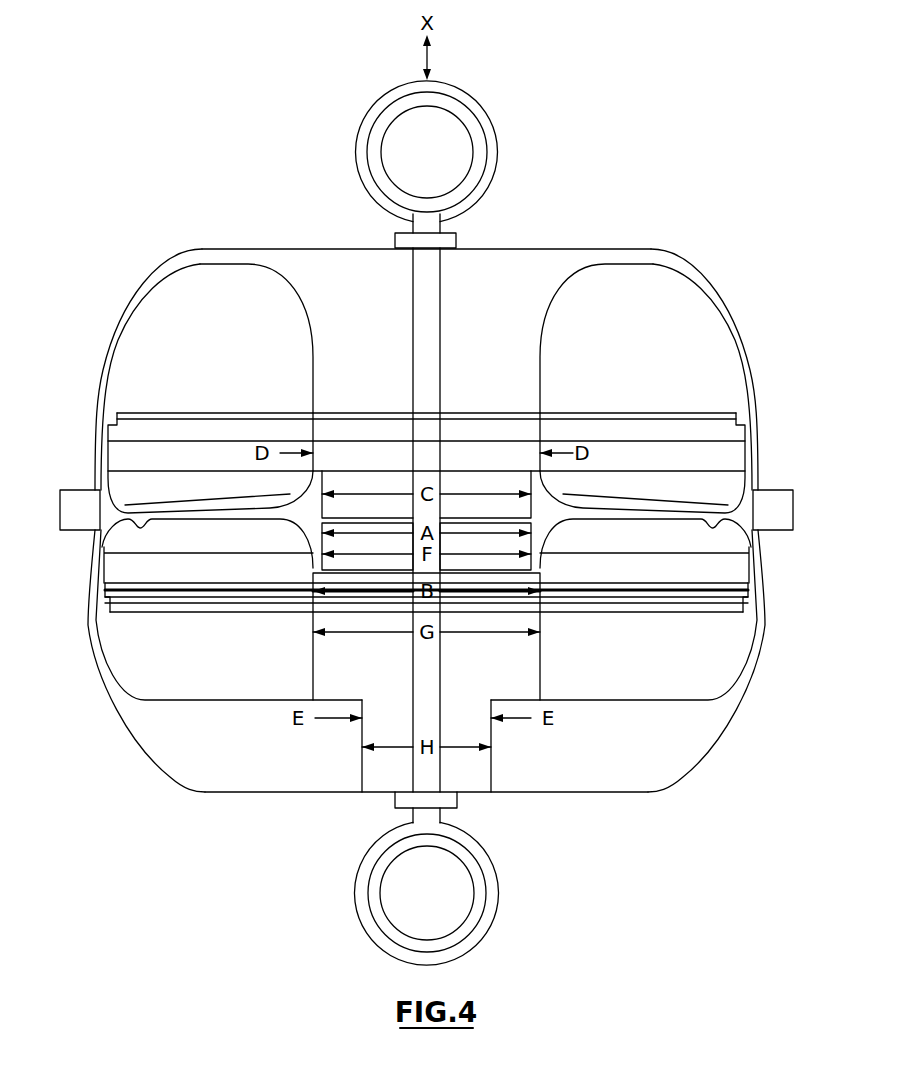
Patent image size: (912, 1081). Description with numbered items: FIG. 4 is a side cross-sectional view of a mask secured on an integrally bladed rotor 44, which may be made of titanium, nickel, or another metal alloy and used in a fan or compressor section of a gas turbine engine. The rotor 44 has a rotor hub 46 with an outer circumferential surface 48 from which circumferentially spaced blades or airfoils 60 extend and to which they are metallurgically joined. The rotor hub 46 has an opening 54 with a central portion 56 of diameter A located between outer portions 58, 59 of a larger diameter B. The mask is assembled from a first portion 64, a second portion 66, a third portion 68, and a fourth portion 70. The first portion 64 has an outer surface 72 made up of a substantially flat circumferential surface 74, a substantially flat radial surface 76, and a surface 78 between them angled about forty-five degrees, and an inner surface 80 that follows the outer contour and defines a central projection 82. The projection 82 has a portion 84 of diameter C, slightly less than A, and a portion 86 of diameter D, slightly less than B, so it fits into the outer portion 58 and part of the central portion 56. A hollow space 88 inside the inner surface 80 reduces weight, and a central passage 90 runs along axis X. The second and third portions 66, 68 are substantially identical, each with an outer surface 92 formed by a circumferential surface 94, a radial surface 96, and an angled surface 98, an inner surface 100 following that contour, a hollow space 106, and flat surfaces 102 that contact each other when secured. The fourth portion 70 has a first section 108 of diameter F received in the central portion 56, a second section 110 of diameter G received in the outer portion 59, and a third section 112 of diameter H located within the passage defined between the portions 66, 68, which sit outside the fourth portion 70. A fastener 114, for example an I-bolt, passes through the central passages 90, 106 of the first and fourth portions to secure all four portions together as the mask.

The integrally bladed rotor 44 is at (600, 437).
The rotor hub 46 is at (675, 410).
The outer circumferential surface 48 is at (758, 468).
The opening 54 is at (495, 493).
The central portion 56 is at (517, 490).
The outer portion 58 is at (452, 447).
The outer portion 59 is at (488, 578).
The blades or airfoils 60 is at (780, 512).
The first portion 64 is at (176, 273).
The second portion 66 is at (223, 768).
The third portion 68 is at (653, 768).
The fourth portion 70 is at (383, 775).
The outer surface 72 is at (212, 248).
The circumferential surface 74 is at (100, 372).
The radial surface 76 is at (268, 248).
The surface located therebetween 78 is at (135, 308).
The inner surface 80 is at (133, 330).
The projection 82 is at (355, 268).
The portion 84 is at (370, 490).
The portion 86 is at (348, 432).
The hollow space 88 is at (168, 308).
The central passage 90 is at (397, 268).
The outer surface 92 is at (168, 778).
The circumferential surface 94 is at (98, 593).
The radial surface 96 is at (270, 793).
The surface located therebetween 98 is at (142, 740).
The inner surface 100 is at (113, 699).
The surfaces 102 is at (362, 735).
The hollow space / central passage 106 is at (133, 640).
The first section 108 is at (533, 543).
The second section 110 is at (537, 642).
The third section 112 is at (478, 762).
The fastener 114 is at (487, 886).